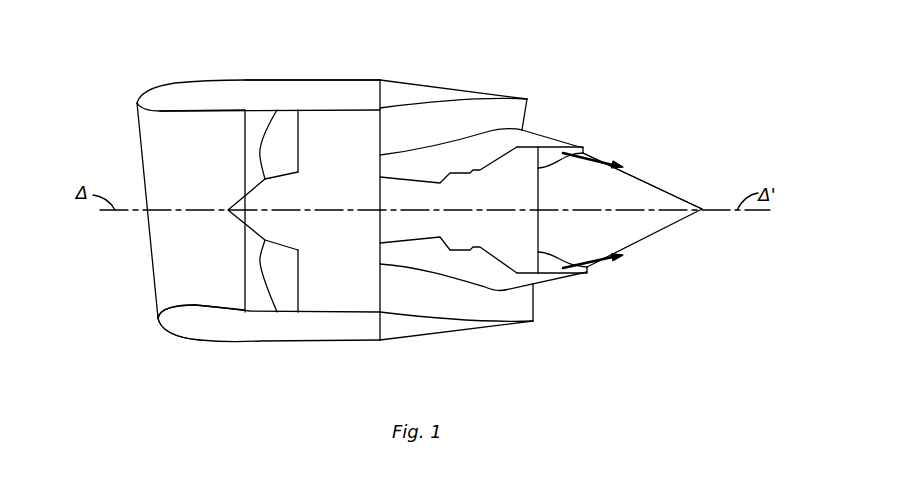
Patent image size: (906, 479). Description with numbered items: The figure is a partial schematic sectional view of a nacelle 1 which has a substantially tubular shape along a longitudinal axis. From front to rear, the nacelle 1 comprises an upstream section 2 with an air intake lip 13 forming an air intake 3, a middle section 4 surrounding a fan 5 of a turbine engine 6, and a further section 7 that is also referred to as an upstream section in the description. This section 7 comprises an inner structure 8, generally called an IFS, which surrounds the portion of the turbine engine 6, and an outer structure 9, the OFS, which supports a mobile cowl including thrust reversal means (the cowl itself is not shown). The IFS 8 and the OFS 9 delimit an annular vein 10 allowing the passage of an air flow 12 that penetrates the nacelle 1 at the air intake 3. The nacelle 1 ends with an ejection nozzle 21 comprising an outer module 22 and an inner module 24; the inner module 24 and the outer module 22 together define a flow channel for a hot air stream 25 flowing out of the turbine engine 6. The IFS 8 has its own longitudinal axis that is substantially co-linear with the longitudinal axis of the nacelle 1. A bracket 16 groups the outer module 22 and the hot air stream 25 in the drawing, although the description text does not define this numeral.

The nacelle 1 is at (545, 73).
The upstream section 2 is at (183, 98).
The air intake 3 is at (178, 282).
The middle section 4 is at (349, 90).
The fan 5 is at (338, 296).
The turbine engine 6 is at (522, 170).
The upstream section (rear section) 7 is at (461, 73).
The inner structure (IFS) 8 is at (520, 121).
The outer structure (OFS) 9 is at (472, 97).
The annular vein 10 is at (390, 128).
The air flow 12 is at (174, 166).
The air intake lip 13 is at (143, 100).
The primary exhaust nozzle assembly 16 is at (650, 93).
The ejection nozzle 21 is at (659, 169).
The outer module 22 is at (578, 145).
The inner module 24 is at (657, 230).
The hot air stream 25 is at (590, 150).